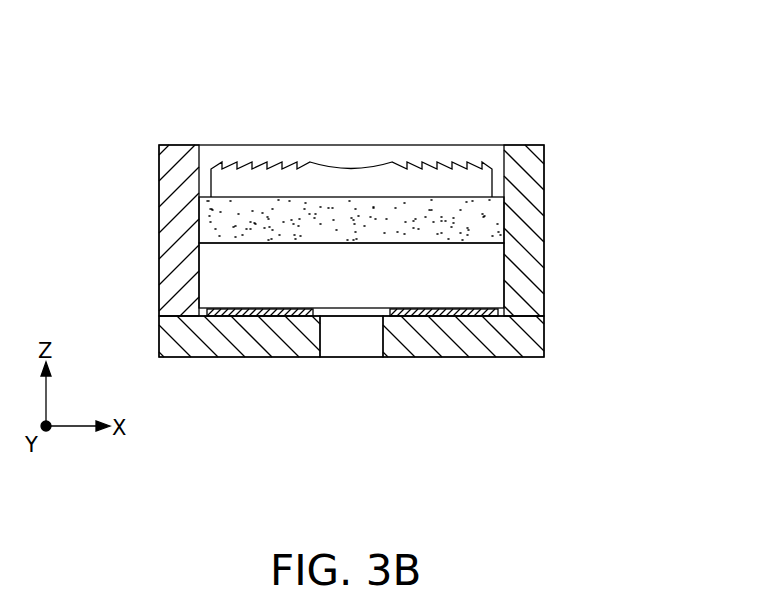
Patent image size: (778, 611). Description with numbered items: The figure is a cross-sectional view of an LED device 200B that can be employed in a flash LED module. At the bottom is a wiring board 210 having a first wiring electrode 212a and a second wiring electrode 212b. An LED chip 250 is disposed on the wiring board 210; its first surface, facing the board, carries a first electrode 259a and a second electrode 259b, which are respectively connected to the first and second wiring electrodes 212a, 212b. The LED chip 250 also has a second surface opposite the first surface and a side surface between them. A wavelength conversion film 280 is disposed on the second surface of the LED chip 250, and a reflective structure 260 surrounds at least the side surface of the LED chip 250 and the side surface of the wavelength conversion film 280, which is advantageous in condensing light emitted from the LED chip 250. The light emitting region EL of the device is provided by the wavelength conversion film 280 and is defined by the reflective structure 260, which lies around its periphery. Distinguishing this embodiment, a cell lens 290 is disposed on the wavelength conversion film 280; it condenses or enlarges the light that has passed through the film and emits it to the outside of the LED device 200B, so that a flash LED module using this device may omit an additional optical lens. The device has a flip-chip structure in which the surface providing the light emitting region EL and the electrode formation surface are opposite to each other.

The LED device 200B is at (578, 57).
The light emitting region EL is at (347, 143).
The wavelength conversion film 280 is at (237, 215).
The cell lens 290 is at (430, 150).
The reflective structure 260 is at (180, 213).
The LED chip 250 is at (212, 258).
The first electrode 259a is at (200, 314).
The second electrode 259b is at (500, 312).
The first wiring electrode 212a is at (237, 345).
The second wiring electrode 212b is at (483, 345).
The wiring board 210 is at (355, 340).